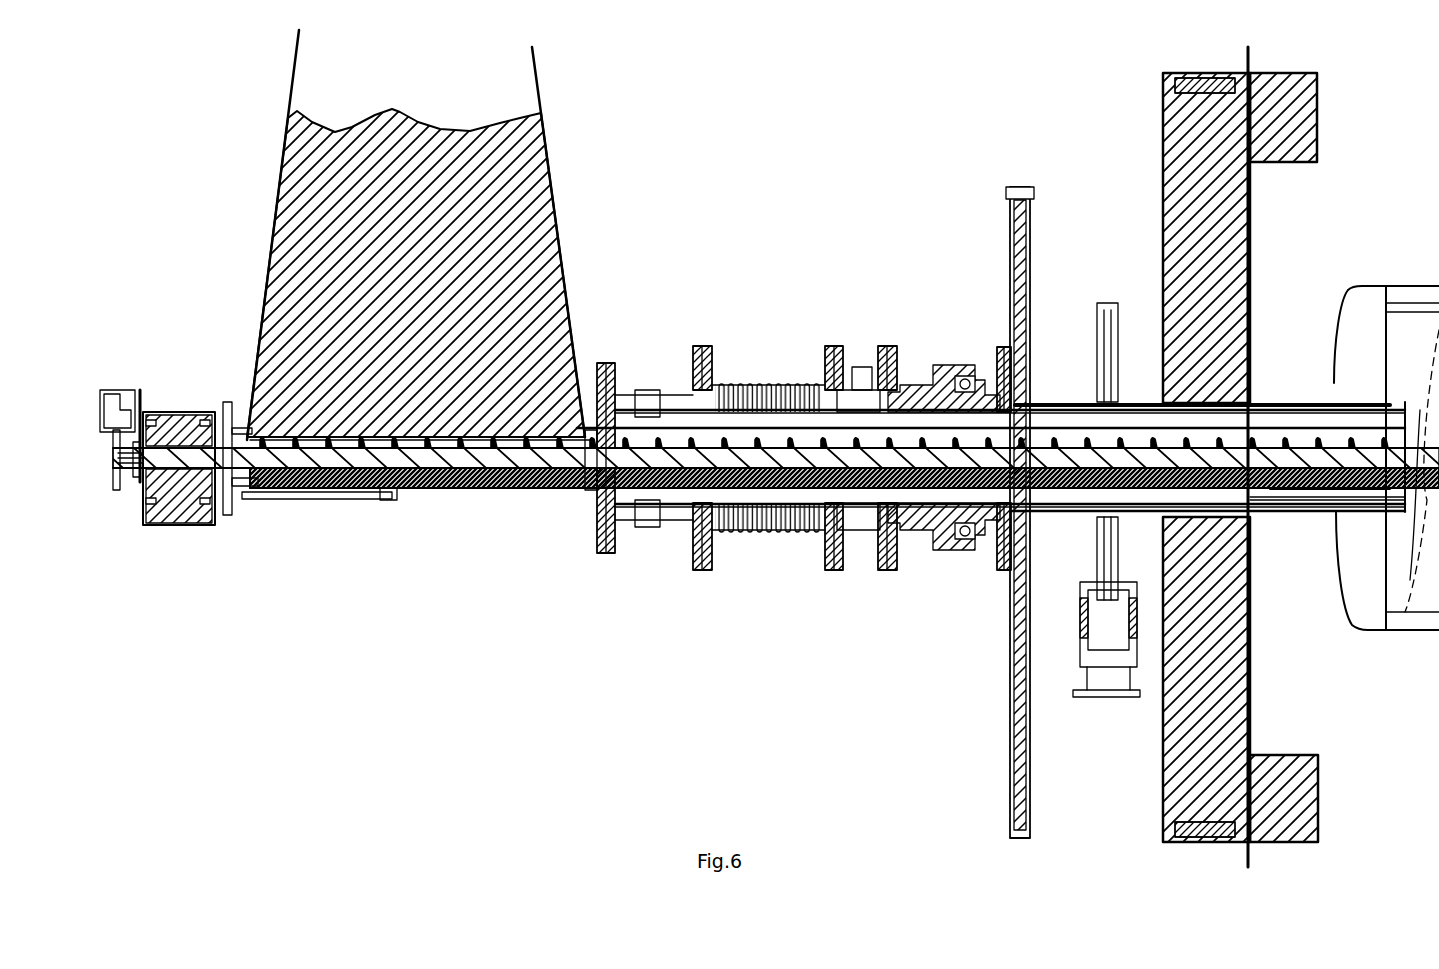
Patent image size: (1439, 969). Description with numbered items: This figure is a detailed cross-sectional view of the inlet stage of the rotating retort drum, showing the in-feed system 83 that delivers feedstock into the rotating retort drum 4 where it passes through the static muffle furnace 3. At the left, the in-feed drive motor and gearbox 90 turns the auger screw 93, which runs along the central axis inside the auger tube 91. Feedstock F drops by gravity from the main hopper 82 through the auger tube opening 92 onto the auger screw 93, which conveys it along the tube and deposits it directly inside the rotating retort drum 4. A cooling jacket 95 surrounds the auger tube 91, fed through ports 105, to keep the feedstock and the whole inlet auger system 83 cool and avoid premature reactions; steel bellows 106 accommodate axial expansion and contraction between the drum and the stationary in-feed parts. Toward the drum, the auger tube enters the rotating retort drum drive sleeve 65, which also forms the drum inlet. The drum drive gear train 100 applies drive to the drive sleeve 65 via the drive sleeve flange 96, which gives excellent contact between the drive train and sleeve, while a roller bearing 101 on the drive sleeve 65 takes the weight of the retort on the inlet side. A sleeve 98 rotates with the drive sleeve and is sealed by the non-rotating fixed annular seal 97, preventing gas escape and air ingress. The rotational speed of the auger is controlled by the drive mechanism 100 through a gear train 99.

The main hopper 82 is at (258, 161).
The inlet auger system 83 is at (836, 218).
The in-feed drive motor and gearbox 90 is at (183, 527).
The auger tube 91 is at (240, 408).
The auger tube opening 92 is at (588, 492).
The auger screw 93 is at (345, 492).
The feedstock F is at (290, 492).
The ports for the water-cooling jacket 105 is at (651, 545).
The steel bellows 106 is at (768, 550).
The gear train 99 is at (870, 350).
The rotating retort drum drive sleeve flange 96 is at (998, 380).
The non-rotating fixed annular seal 97 is at (950, 556).
The sleeve 98 is at (987, 548).
The drum drive gear train 100 is at (1008, 656).
The roller bearing 101 is at (1120, 700).
The muffle furnace 3 is at (1163, 118).
The rotating retort drum 4 is at (1392, 282).
The rotating retort drum drive sleeve 65 is at (1268, 512).
The cooling jacket 95 is at (1291, 512).